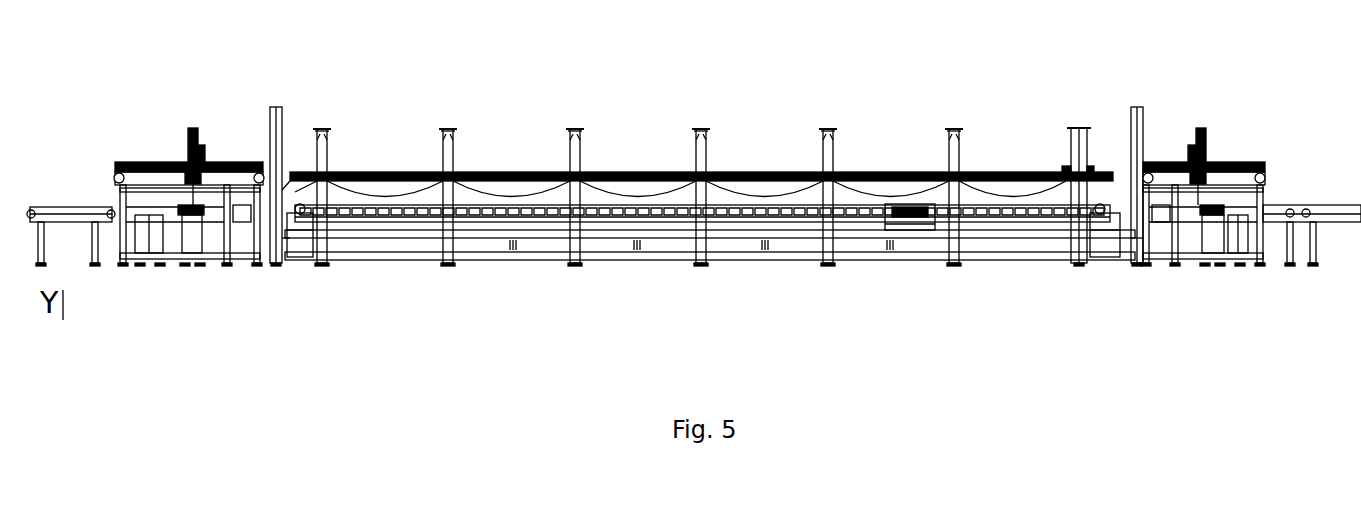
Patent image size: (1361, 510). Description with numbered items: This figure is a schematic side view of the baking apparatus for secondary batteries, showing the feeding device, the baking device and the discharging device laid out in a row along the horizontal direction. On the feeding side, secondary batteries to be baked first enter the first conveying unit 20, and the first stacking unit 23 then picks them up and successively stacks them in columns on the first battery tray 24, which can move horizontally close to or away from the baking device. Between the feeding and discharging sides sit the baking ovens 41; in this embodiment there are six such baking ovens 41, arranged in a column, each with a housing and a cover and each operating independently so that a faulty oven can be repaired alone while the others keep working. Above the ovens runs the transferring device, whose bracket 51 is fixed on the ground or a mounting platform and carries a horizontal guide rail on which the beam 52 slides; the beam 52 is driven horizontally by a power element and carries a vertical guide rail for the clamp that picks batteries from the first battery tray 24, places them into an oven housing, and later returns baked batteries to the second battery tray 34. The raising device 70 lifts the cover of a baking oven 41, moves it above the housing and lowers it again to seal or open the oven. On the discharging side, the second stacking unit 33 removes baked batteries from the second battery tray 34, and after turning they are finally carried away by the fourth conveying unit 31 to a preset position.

The first conveying unit 20 is at (1342, 205).
The first stacking unit 23 is at (1228, 162).
The first battery tray 24 is at (1105, 228).
The fourth conveying unit 31 is at (62, 205).
The second stacking unit 33 is at (215, 164).
The second battery tray 34 is at (293, 240).
The baking oven 41 is at (372, 225).
The bracket 51 is at (900, 172).
The beam 52 is at (1066, 168).
The raising device 70 is at (908, 232).